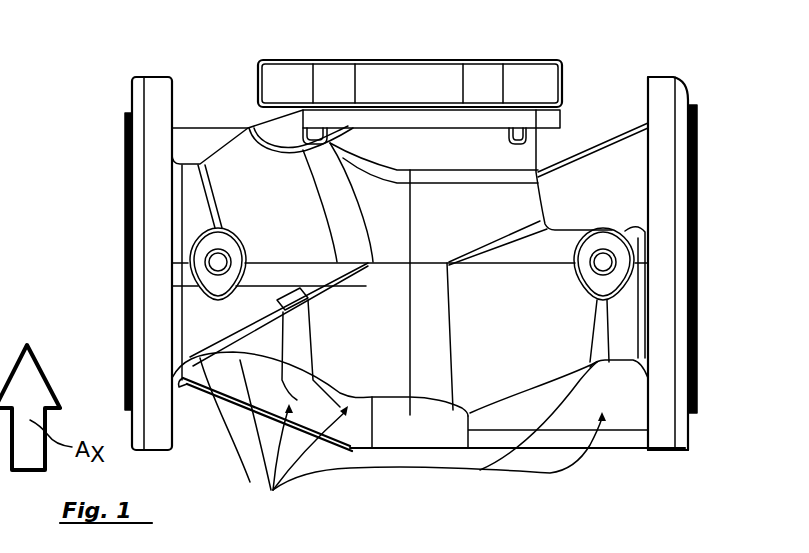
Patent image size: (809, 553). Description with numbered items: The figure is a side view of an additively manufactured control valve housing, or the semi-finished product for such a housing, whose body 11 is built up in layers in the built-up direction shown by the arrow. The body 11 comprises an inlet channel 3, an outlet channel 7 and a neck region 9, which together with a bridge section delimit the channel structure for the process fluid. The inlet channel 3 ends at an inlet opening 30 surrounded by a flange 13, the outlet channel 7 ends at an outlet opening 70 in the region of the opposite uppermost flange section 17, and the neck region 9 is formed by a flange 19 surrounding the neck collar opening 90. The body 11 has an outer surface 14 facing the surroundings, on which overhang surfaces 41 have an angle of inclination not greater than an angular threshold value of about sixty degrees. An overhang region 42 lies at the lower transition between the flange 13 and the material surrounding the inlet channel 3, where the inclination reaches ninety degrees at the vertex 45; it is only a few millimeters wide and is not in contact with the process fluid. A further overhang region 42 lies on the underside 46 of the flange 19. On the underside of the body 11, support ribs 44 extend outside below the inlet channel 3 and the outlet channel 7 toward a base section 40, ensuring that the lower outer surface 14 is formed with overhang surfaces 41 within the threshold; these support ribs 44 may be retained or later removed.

The inlet channel 3 is at (247, 203).
The outlet channel 7 is at (637, 167).
The neck region 9 is at (427, 150).
The body 11 is at (157, 383).
The flange 13 is at (157, 93).
The outer surface 14 is at (445, 226).
The uppermost flange section 17 is at (663, 425).
The flange 19 is at (272, 82).
The inlet opening 30 is at (112, 267).
The base section 40 is at (425, 440).
The overhang surfaces 41 is at (303, 358).
The overhang region 42 is at (552, 121).
The support ribs 44 is at (238, 533).
The vertex 45 is at (603, 296).
The underside of the flange 46 is at (547, 112).
The outlet opening 70 is at (708, 280).
The neck collar opening 90 is at (384, 55).